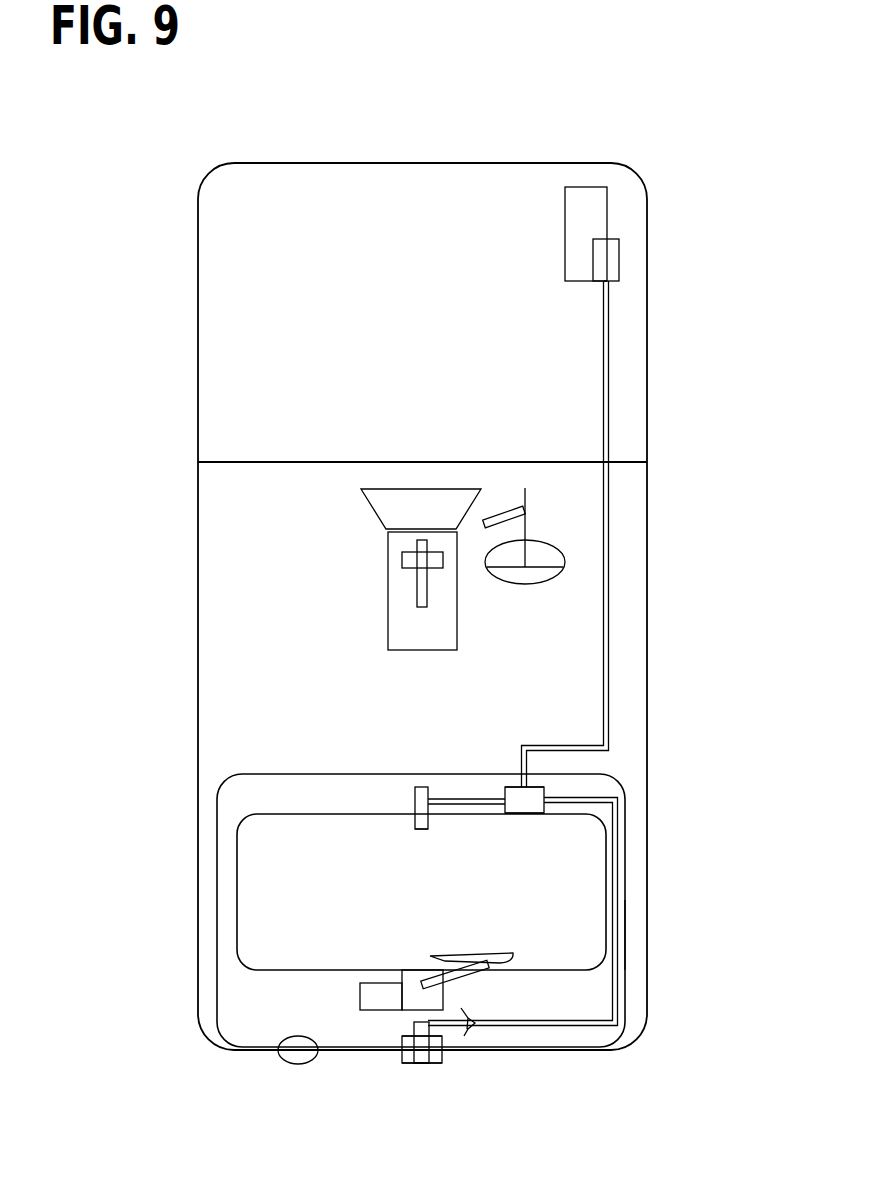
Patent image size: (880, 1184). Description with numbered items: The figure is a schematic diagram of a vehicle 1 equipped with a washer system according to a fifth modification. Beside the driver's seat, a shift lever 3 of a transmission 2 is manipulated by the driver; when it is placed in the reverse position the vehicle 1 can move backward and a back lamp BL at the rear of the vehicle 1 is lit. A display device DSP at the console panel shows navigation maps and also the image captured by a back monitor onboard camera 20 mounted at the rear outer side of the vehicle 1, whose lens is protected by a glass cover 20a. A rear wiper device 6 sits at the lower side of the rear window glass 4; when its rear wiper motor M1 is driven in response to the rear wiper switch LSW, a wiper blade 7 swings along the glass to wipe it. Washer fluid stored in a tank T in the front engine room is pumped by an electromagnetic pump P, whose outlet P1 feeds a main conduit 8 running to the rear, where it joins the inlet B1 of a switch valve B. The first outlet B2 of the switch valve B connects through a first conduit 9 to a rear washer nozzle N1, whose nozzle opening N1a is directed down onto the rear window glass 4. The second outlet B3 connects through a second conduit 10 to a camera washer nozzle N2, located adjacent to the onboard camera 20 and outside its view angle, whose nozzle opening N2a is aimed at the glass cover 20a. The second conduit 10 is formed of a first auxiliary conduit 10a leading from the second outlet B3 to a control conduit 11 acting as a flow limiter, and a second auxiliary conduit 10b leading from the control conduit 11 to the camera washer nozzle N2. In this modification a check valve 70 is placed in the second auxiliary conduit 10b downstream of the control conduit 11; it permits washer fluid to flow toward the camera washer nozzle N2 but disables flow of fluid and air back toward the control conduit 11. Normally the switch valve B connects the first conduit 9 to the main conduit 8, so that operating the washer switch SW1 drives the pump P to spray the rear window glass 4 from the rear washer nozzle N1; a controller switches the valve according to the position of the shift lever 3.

The vehicle 1 is at (708, 400).
The tank T is at (565, 233).
The electromagnetic pump P is at (619, 259).
The outlet of the electromagnetic pump P1 is at (609, 282).
The main conduit 8 is at (603, 350).
The display device DSP is at (371, 505).
The transmission 2 is at (388, 612).
The shift lever 3 is at (402, 558).
The rear wiper switch LSW is at (526, 508).
The washer switch SW1 is at (489, 520).
The rear window glass 4 is at (297, 814).
The first conduit 9 is at (453, 799).
The rear washer nozzle N1 is at (415, 790).
The nozzle opening of the rear washer nozzle N1a is at (421, 829).
The switch valve B is at (512, 787).
The inlet of the switch valve B1 is at (525, 787).
The first outlet of the switch valve B2 is at (505, 813).
The second outlet of the switch valve B3 is at (548, 813).
The second conduit 10 is at (523, 912).
The first auxiliary conduit 10a is at (612, 895).
The second auxiliary conduit 10b is at (617, 960).
The control conduit 11 is at (626, 936).
The wiper blade 7 is at (438, 955).
The rear wiper device 6 is at (444, 997).
The rear wiper motor M1 is at (360, 996).
The camera washer nozzle N2 is at (414, 1027).
The nozzle opening of the camera washer nozzle N2a is at (410, 1063).
The onboard camera 20 is at (443, 1058).
The glass cover 20a is at (437, 1063).
The check valve 70 is at (467, 1030).
The back lamp BL is at (298, 1065).